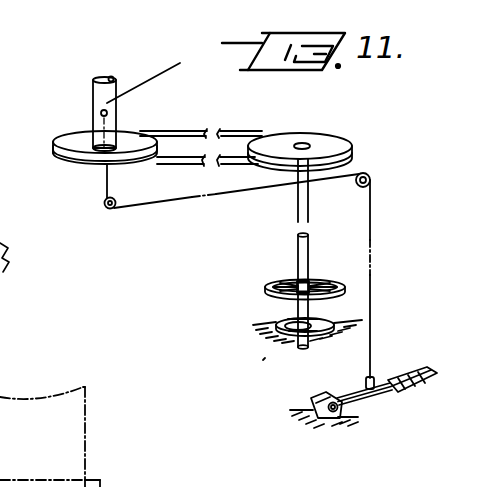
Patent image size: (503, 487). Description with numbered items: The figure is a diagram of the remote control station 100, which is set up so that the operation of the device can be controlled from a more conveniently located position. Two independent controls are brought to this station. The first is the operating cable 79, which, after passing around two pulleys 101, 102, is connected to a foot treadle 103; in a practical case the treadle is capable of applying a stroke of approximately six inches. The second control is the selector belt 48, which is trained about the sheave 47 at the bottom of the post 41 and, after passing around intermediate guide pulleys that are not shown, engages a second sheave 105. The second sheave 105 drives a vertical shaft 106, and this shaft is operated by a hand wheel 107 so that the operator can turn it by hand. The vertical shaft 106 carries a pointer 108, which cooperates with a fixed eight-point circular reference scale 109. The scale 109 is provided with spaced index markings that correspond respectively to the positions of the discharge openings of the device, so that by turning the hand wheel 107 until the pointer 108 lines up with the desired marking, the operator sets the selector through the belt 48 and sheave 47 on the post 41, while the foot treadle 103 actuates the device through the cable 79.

The post 41 is at (94, 92).
The sheave 47 is at (70, 140).
The selector belt 48 is at (175, 134).
The operating cable 79 is at (163, 72).
The remote control station 100 is at (262, 361).
The pulley 101 is at (104, 204).
The pulley 102 is at (372, 176).
The foot treadle 103 is at (400, 393).
The second sheave 105 is at (328, 137).
The vertical shaft 106 is at (297, 206).
The hand wheel 107 is at (288, 280).
The pointer 108 is at (278, 321).
The circular reference scale 109 is at (324, 322).